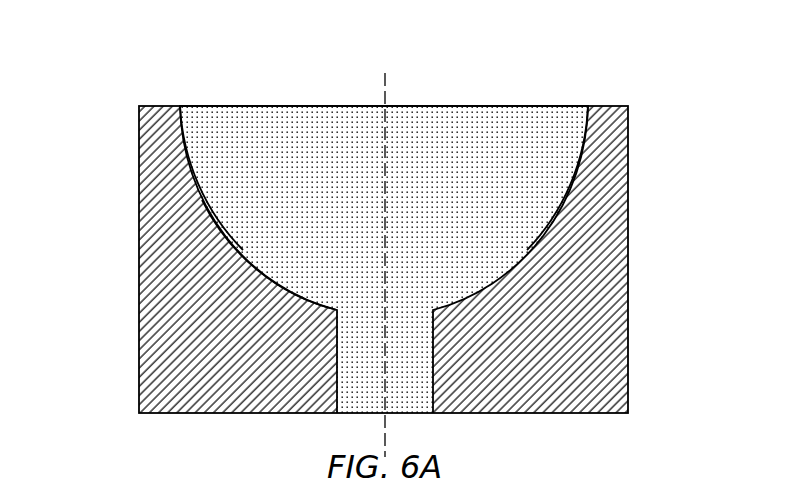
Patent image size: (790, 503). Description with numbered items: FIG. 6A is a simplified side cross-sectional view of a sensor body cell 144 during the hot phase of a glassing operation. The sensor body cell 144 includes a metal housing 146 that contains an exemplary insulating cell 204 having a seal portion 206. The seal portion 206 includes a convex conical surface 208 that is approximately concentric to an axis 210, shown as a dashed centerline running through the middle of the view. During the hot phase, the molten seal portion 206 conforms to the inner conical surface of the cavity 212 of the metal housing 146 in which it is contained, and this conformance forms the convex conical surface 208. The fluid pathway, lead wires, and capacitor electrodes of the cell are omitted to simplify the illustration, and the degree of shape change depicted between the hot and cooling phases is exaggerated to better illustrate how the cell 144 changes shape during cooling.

The sensor body cell 144 is at (140, 62).
The metal housing 146 is at (148, 192).
The insulating cell 204 is at (520, 183).
The seal portion 206 is at (505, 128).
The convex conical surface 208 is at (238, 262).
The axis 210 is at (386, 86).
The cavity 212 is at (308, 162).